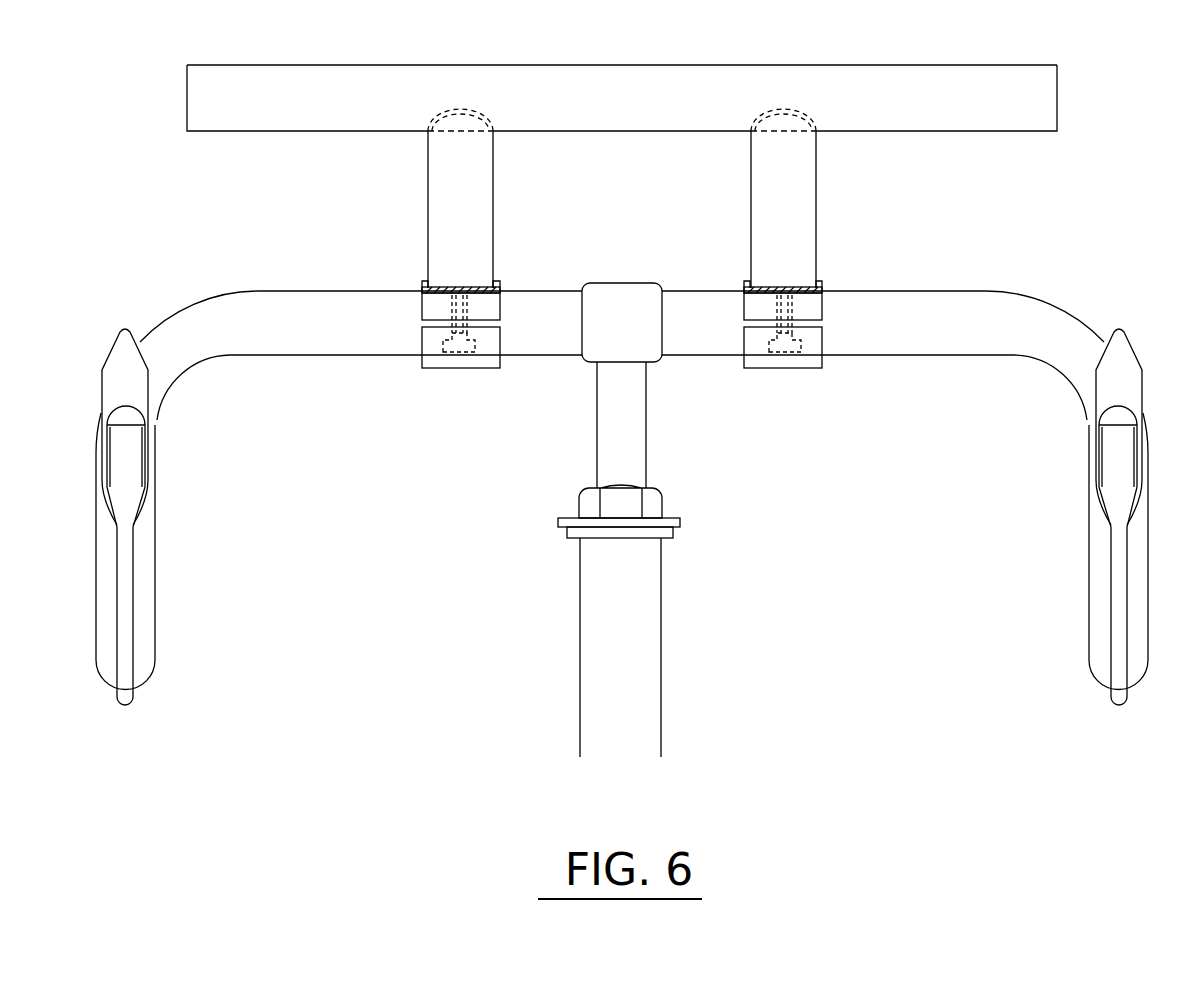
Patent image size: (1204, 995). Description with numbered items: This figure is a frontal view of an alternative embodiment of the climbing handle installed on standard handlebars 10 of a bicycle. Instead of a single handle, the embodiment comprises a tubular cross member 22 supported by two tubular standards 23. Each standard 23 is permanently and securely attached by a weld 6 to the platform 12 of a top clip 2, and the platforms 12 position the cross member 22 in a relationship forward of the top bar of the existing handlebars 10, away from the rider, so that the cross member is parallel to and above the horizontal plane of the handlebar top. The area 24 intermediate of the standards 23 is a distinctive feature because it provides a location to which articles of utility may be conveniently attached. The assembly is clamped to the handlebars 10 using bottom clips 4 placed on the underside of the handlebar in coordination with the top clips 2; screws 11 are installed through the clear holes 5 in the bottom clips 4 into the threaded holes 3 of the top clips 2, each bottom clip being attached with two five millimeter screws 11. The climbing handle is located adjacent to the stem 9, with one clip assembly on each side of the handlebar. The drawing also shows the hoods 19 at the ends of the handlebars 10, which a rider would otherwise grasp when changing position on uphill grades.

The top clip 2 is at (745, 288).
The threaded holes 3 is at (450, 308).
The bottom clip 4 is at (438, 368).
The clear holes 5 is at (792, 335).
The weld 6 is at (798, 288).
The stem 9 is at (645, 432).
The handlebars 10 is at (1048, 302).
The screws 11 is at (788, 336).
The platform 12 is at (490, 290).
The hoods 19 is at (108, 352).
The tubular cross member 22 is at (382, 65).
The tubular standards 23 is at (817, 212).
The area intermediate of said standards 24 is at (702, 65).